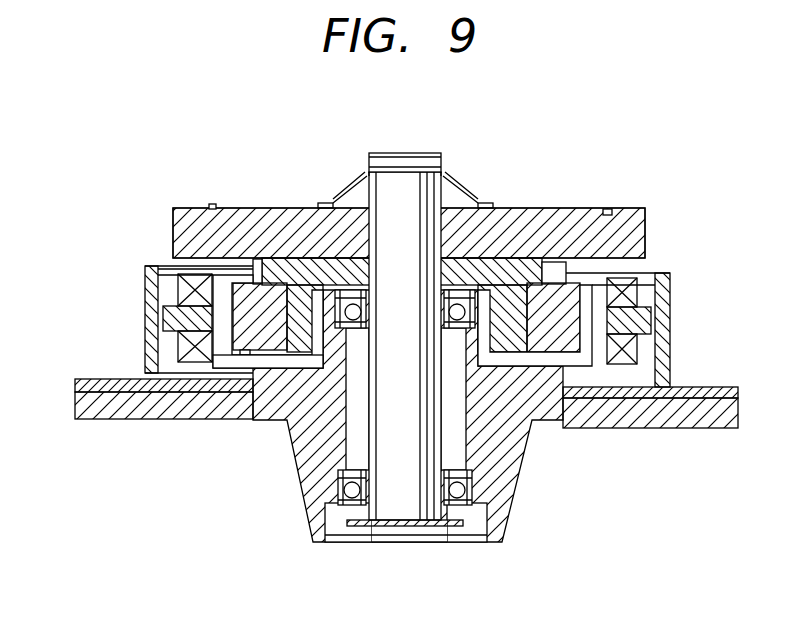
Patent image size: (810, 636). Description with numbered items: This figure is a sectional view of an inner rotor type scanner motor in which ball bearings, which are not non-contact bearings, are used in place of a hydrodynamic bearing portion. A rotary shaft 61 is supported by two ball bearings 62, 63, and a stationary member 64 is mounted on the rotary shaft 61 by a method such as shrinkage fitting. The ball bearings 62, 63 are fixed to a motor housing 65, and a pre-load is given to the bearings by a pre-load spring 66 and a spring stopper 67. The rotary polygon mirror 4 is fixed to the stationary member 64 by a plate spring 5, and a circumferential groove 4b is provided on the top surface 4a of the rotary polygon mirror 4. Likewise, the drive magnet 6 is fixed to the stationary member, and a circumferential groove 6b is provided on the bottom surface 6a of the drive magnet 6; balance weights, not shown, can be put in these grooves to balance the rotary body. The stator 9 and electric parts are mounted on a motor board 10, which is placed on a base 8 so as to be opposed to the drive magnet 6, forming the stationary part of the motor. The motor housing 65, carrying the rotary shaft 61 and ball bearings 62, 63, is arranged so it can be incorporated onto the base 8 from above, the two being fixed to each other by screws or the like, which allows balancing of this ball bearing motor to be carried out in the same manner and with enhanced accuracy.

The rotary polygon mirror 4 is at (188, 212).
The top surface of the rotary polygon mirror 4a is at (248, 212).
The circumferential groove 4b is at (212, 206).
The plate spring 5 is at (348, 182).
The drive magnet 6 is at (260, 420).
The bottom surface of the drive magnet 6a is at (227, 420).
The circumferential groove 6b is at (185, 420).
The base 8 is at (673, 417).
The stator 9 is at (620, 283).
The motor board 10 is at (708, 392).
The rotary shaft 61 is at (410, 158).
The ball bearing 62 is at (470, 300).
The ball bearing 63 is at (470, 503).
The stationary member 64 is at (557, 262).
The motor housing 65 is at (500, 520).
The pre-load spring 66 is at (348, 503).
The spring stopper 67 is at (358, 535).